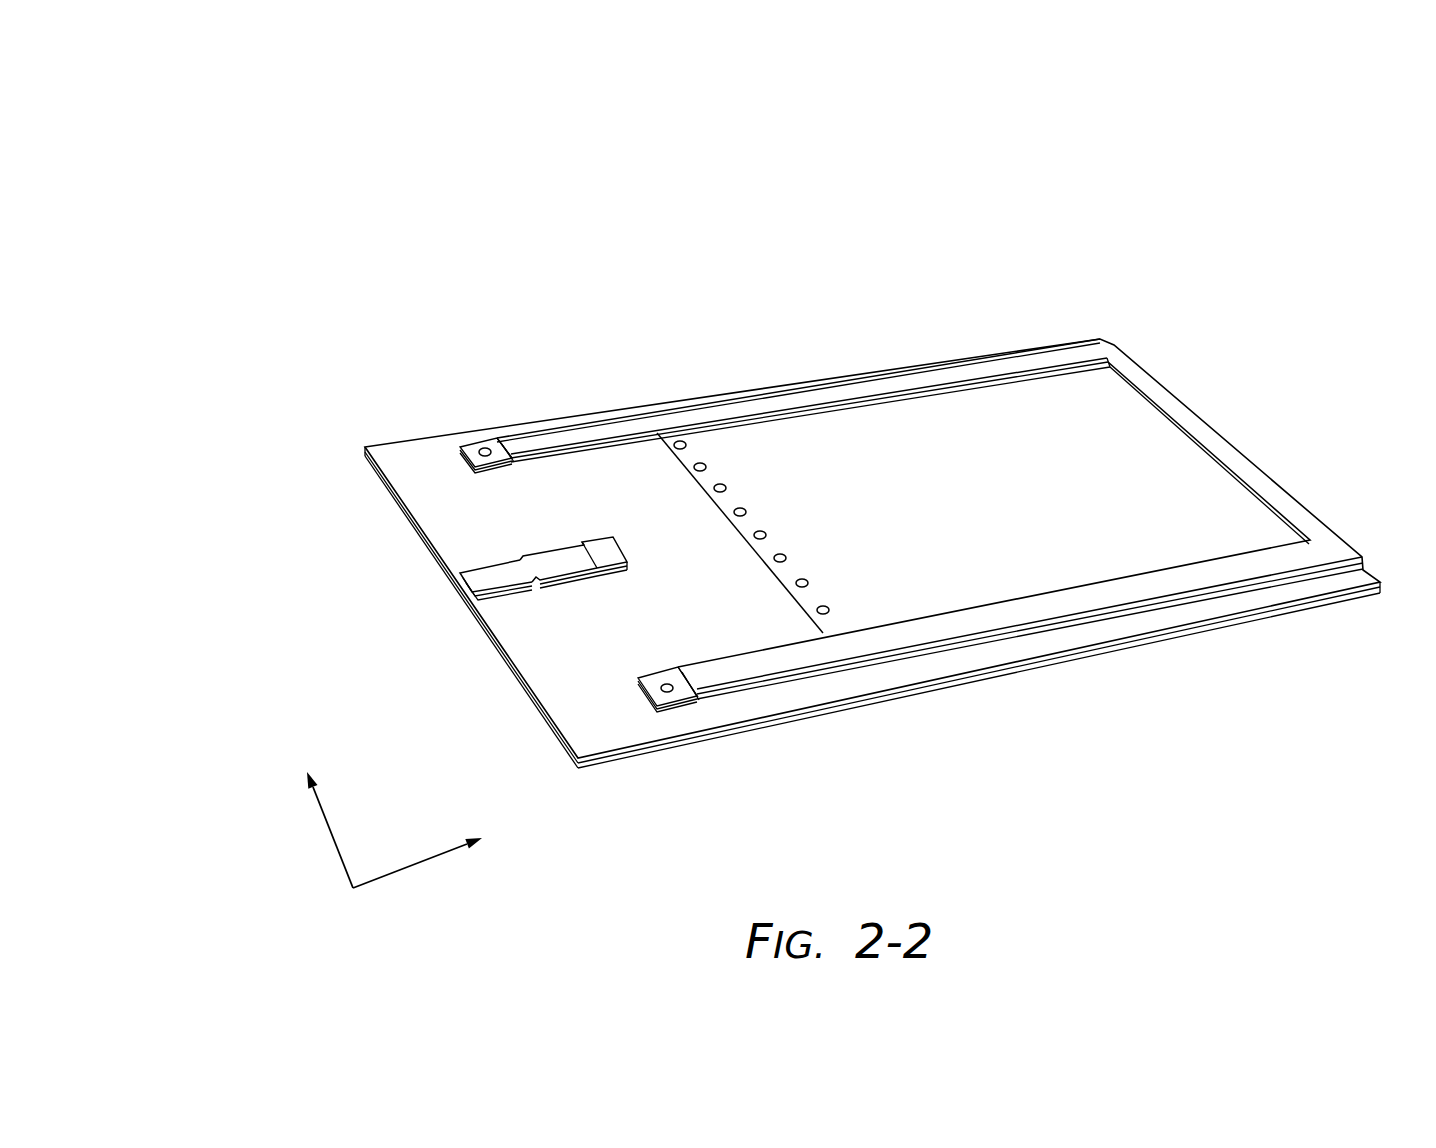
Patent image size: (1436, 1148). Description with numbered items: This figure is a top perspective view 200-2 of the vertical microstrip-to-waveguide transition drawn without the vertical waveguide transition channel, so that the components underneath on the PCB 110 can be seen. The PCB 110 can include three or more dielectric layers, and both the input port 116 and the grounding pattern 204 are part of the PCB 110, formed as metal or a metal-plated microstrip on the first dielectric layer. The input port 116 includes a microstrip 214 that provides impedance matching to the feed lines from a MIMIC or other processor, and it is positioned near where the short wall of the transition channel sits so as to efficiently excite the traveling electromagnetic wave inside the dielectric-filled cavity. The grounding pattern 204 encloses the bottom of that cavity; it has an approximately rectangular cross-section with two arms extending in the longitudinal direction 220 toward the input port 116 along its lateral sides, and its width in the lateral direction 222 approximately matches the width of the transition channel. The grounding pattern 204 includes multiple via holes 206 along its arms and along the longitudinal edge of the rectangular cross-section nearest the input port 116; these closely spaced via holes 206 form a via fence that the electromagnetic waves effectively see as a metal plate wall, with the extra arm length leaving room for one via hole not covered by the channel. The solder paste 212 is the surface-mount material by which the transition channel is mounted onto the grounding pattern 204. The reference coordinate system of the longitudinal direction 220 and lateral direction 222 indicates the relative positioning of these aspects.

The top perspective view 200-2 is at (269, 75).
The PCB 110 is at (432, 448).
The grounding pattern 204 is at (1120, 427).
The solder paste 212 is at (497, 732).
The via holes 206 is at (672, 691).
The microstrip 214 is at (553, 568).
The input port 116 is at (502, 573).
The lateral direction 222 is at (280, 830).
The longitudinal direction 220 is at (437, 898).